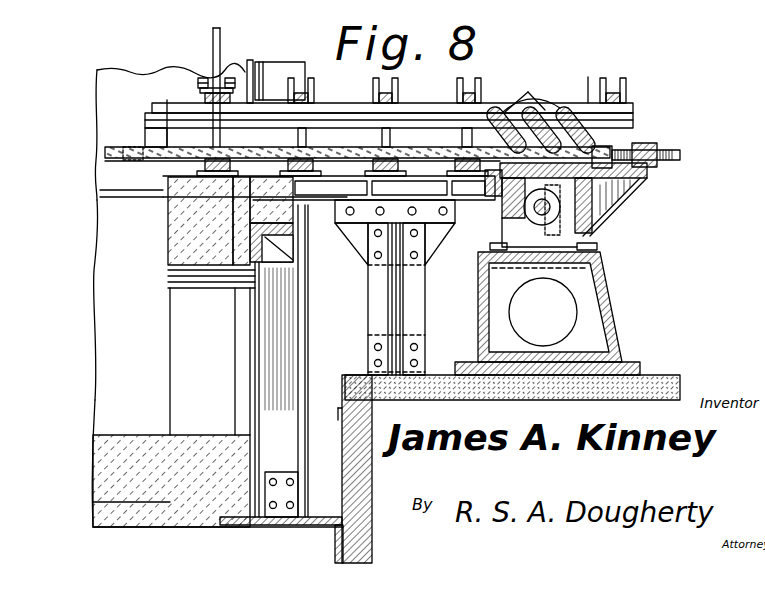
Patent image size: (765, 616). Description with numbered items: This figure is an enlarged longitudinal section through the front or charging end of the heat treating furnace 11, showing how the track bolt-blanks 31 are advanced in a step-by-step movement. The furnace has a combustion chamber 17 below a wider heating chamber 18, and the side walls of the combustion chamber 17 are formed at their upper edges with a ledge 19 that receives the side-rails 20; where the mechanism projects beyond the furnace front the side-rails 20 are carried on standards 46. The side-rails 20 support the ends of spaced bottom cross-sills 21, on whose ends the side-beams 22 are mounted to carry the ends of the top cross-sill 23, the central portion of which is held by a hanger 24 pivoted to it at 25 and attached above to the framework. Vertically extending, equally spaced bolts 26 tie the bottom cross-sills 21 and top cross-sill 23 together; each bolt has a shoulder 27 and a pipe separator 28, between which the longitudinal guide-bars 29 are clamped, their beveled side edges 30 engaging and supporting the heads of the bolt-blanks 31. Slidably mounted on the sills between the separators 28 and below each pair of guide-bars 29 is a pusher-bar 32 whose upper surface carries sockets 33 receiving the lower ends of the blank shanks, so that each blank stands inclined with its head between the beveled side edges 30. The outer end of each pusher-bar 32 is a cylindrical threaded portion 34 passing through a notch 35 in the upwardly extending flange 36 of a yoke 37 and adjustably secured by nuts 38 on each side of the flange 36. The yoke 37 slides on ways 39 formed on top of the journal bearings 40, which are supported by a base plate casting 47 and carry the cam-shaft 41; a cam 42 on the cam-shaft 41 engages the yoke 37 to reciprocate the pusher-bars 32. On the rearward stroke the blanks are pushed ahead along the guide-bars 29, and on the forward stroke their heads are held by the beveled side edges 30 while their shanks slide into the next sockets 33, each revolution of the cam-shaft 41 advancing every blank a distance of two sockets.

The heat treating furnace 11 is at (110, 80).
The combustion chamber 17 is at (100, 390).
The heating chamber 18 is at (143, 76).
The ledge 19 is at (100, 208).
The side-rails 20 is at (162, 203).
The bottom cross-sills 21 is at (316, 205).
The side-beams 22 is at (155, 135).
The top cross-sill 23 is at (288, 93).
The hanger 24 is at (216, 30).
The pivot 25 is at (210, 82).
The bolts 26 is at (458, 134).
The shoulder 27 is at (462, 107).
The pipe separator 28 is at (385, 140).
The guide-bars 29 is at (153, 117).
The beveled side edges 30 is at (588, 100).
The track bolt-blanks 31 is at (522, 110).
The pusher-bar 32 is at (140, 152).
The sockets 33 is at (177, 172).
The threaded cylindrical portion 34 is at (678, 156).
The notches 35 is at (635, 146).
The flanges 36 is at (647, 170).
The yoke 37 is at (615, 198).
The nuts 38 is at (657, 145).
The ways 39 is at (505, 200).
The journal bearings 40 is at (430, 258).
The cam-shaft 41 is at (424, 278).
The cam 42 is at (590, 226).
The standards 46 is at (385, 292).
The base plate casting 47 is at (614, 320).